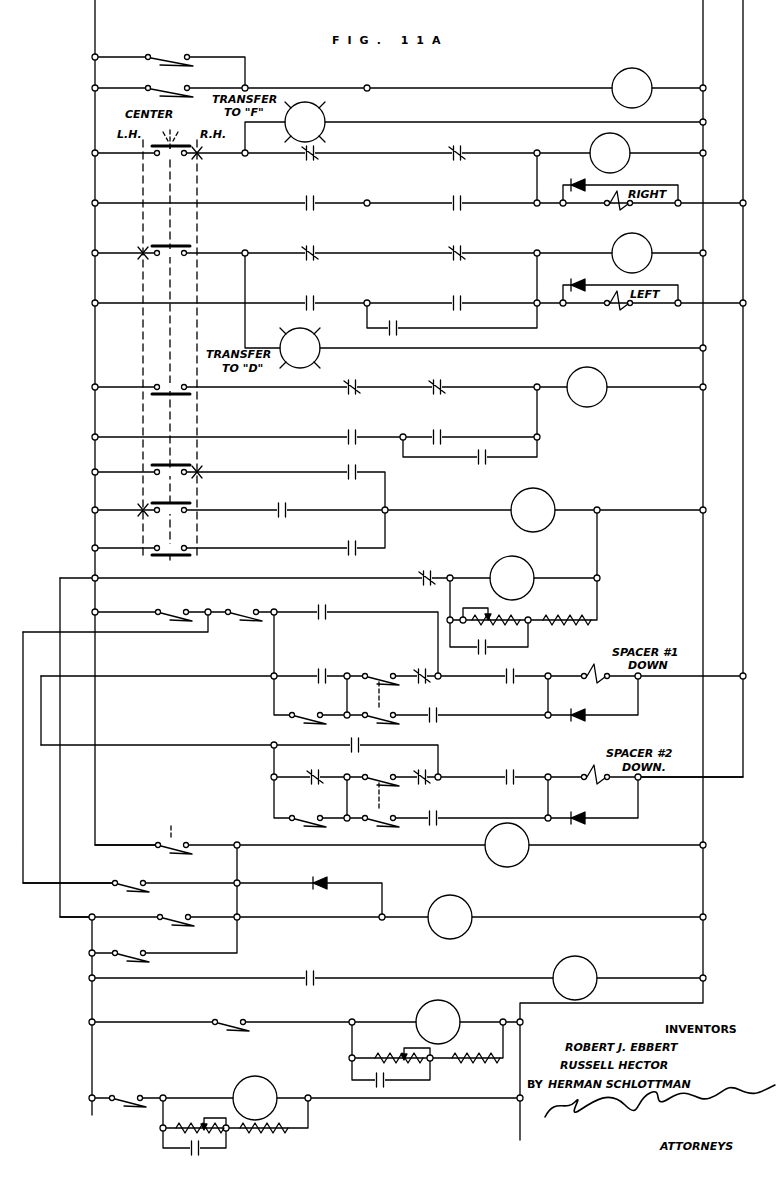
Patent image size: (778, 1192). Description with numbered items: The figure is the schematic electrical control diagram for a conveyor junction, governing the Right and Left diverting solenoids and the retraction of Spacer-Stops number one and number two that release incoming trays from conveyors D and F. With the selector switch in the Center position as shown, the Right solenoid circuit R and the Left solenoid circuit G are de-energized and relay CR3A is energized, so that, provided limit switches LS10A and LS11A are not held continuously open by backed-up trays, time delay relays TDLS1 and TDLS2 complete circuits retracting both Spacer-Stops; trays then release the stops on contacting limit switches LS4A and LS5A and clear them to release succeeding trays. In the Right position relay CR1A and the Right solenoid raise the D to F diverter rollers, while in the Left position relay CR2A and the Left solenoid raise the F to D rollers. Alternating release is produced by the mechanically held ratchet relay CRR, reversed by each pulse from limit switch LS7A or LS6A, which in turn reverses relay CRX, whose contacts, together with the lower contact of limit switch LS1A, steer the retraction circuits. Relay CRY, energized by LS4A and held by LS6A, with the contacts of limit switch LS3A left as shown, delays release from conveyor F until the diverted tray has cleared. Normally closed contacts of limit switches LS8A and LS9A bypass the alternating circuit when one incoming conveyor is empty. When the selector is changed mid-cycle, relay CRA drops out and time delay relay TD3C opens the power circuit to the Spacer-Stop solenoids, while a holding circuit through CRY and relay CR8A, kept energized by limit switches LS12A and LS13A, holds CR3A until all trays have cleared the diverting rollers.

The limit switch LS12A is at (164, 51).
The limit switch LS13A is at (164, 83).
The Right solenoid circuit indicator R is at (305, 122).
The Left solenoid circuit indicator G is at (300, 348).
The relay CR8A is at (514, 275).
The relay CR1A is at (461, 306).
The relay CR2A is at (458, 331).
The relay CR3A is at (456, 441).
The relay CRY is at (412, 526).
The relay CRA is at (482, 537).
The time delay relay TD3C is at (524, 599).
The relay CRX is at (448, 826).
The mechanically held ratchet relay CRR is at (385, 940).
The time delay relay TDLS1 is at (447, 874).
The time delay relay TDLS2 is at (353, 925).
The limit switch LS5A is at (171, 722).
The limit switch LS4A is at (185, 741).
The limit switch LS1A is at (377, 669).
The limit switch LS9A is at (345, 709).
The limit switch LS3A is at (378, 772).
The limit switch LS8A is at (345, 812).
The limit switch LS6A is at (176, 911).
The limit switch LS7A is at (130, 947).
The limit switch LS10A is at (232, 1016).
The limit switch LS11A is at (130, 1090).